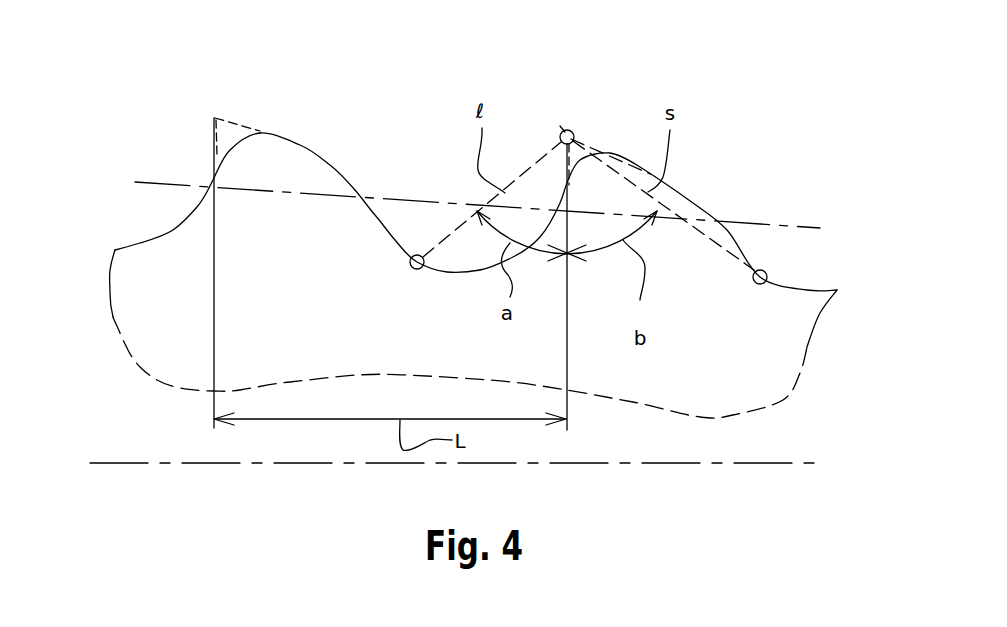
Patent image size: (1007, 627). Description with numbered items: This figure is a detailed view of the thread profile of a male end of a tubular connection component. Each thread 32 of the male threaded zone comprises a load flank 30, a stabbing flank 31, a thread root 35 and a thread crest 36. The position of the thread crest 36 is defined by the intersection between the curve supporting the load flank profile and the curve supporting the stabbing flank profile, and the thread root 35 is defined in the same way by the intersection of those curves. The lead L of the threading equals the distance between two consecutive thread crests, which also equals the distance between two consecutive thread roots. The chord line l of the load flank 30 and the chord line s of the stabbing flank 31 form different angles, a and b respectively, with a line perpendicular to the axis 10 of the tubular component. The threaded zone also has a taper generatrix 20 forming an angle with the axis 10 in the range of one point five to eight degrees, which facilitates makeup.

The axis 10 is at (762, 465).
The taper generatrix 20 is at (780, 224).
The load flank 30 is at (173, 230).
The stabbing flank 31 is at (338, 172).
The thread 32 is at (700, 137).
The thread root 35 is at (412, 267).
The thread crest 36 is at (213, 117).